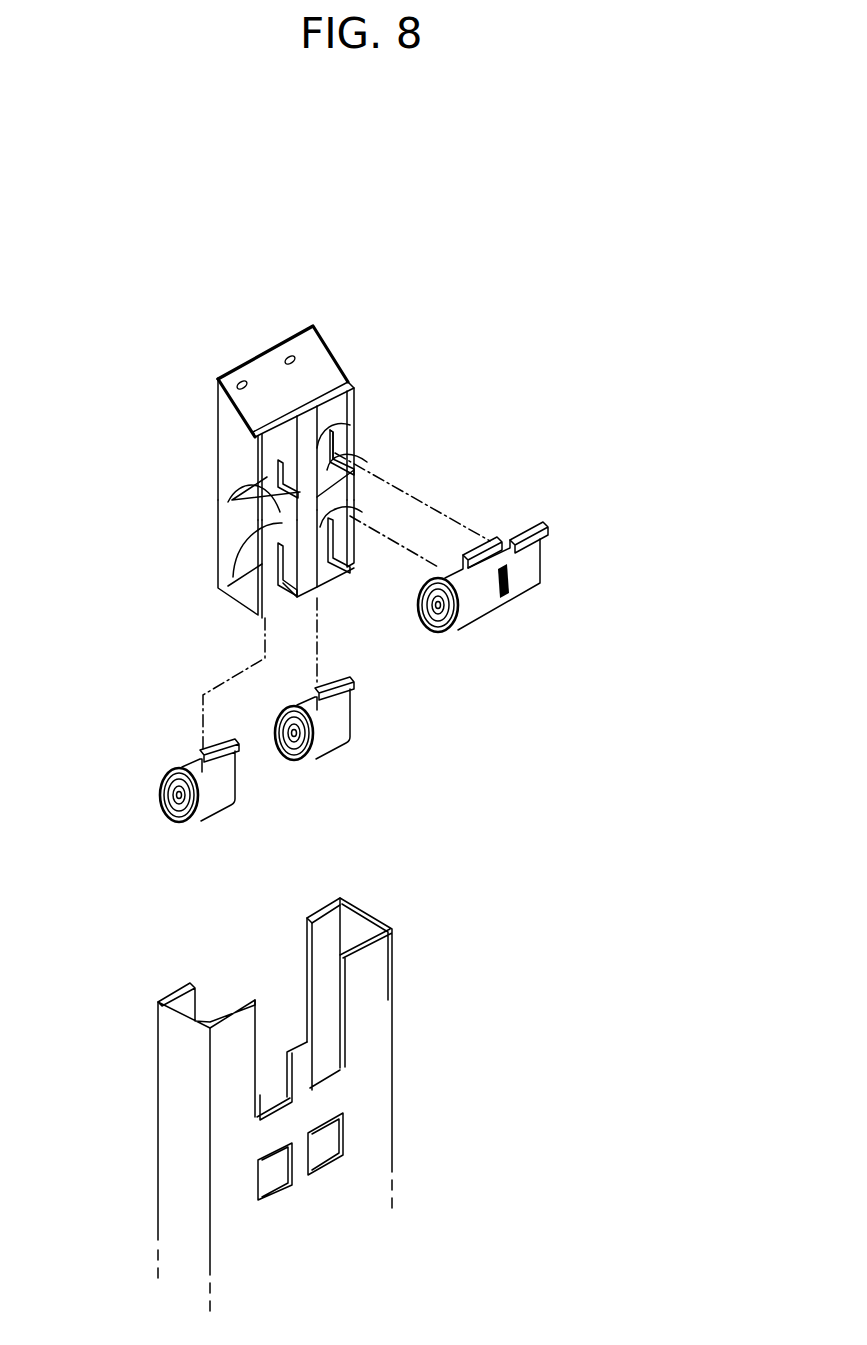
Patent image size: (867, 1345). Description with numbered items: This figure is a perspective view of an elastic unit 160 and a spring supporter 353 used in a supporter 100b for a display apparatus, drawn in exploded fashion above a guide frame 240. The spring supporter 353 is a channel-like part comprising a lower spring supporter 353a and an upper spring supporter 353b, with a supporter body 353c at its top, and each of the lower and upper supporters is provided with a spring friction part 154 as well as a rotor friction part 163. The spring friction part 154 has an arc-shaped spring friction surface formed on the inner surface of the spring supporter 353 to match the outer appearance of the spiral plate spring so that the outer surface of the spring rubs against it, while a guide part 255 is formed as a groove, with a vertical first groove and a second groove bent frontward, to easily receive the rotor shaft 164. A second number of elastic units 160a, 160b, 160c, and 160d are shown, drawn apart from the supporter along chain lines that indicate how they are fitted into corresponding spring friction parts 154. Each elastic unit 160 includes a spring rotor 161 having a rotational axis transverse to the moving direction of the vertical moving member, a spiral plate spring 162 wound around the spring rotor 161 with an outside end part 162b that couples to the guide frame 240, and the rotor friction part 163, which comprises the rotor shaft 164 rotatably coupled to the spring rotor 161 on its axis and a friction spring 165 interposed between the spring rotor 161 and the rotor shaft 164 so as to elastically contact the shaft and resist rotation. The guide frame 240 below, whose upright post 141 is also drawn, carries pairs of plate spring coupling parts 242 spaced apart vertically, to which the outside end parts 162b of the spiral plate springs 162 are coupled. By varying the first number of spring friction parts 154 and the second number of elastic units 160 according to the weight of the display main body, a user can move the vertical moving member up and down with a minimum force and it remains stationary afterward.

The supporter 100b is at (542, 317).
The spring supporter 353 is at (100, 481).
The lower spring supporter 353a is at (262, 562).
The upper spring supporter 353b is at (260, 498).
The supporter body 353c is at (278, 397).
The spring friction part 154 is at (290, 500).
The guide part 255 is at (338, 452).
The elastic unit 160 is at (645, 683).
The elastic unit 160a is at (227, 805).
The elastic unit 160b is at (333, 735).
The elastic unit 160c is at (450, 567).
The elastic unit 160d is at (540, 556).
The spring rotor 161 is at (503, 635).
The spiral plate spring 162 is at (535, 622).
The outside end part 162b is at (582, 622).
The rotor friction part 163 is at (447, 672).
The rotor shaft 164 is at (451, 645).
The friction spring 165 is at (419, 665).
The post of support frame 141 is at (358, 942).
The guide frame 240 is at (388, 1122).
The plate spring coupling part 242 is at (273, 1117).